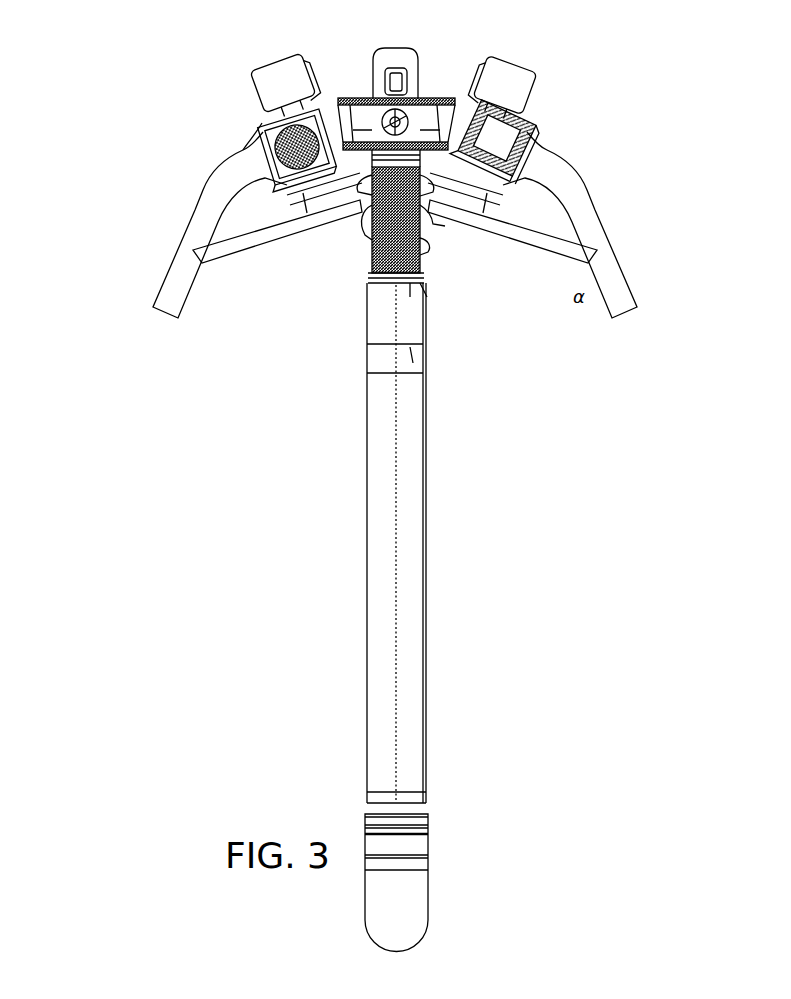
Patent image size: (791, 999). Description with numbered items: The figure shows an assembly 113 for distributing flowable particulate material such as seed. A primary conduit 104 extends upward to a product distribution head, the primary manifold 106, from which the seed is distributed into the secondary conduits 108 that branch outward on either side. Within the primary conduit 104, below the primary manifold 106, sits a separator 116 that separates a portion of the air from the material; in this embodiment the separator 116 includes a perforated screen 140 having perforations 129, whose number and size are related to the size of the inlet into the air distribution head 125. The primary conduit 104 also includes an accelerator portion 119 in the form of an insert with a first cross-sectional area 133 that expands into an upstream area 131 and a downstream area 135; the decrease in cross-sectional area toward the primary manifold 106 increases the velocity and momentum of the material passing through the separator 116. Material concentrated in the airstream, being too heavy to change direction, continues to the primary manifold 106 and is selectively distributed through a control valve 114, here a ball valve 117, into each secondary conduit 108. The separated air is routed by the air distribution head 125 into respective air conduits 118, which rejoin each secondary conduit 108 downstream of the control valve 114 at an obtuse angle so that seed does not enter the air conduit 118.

The primary conduit 104 is at (410, 592).
The primary manifold 106 is at (420, 110).
The secondary conduit 108 is at (588, 172).
The assembly 113 is at (158, 131).
The control valve 114 is at (535, 62).
The separator 116 is at (433, 228).
The ball valve 117 is at (515, 130).
The air conduit 118 is at (525, 222).
The accelerator portion 119 is at (427, 295).
The air distribution head 125 is at (350, 98).
The perforations 129 is at (428, 243).
The upstream area 131 is at (410, 347).
The first cross-sectional area 133 is at (367, 296).
The downstream area 135 is at (367, 243).
The perforated screen 140 is at (367, 262).